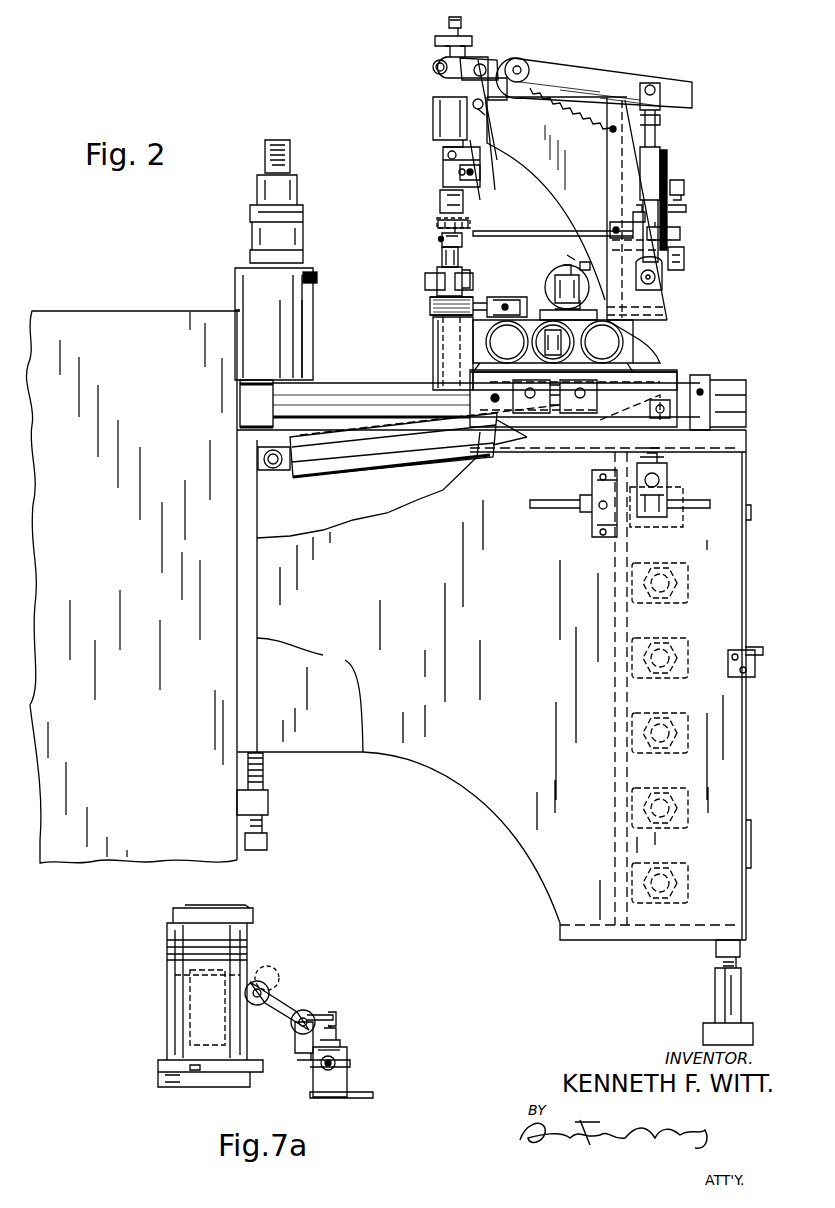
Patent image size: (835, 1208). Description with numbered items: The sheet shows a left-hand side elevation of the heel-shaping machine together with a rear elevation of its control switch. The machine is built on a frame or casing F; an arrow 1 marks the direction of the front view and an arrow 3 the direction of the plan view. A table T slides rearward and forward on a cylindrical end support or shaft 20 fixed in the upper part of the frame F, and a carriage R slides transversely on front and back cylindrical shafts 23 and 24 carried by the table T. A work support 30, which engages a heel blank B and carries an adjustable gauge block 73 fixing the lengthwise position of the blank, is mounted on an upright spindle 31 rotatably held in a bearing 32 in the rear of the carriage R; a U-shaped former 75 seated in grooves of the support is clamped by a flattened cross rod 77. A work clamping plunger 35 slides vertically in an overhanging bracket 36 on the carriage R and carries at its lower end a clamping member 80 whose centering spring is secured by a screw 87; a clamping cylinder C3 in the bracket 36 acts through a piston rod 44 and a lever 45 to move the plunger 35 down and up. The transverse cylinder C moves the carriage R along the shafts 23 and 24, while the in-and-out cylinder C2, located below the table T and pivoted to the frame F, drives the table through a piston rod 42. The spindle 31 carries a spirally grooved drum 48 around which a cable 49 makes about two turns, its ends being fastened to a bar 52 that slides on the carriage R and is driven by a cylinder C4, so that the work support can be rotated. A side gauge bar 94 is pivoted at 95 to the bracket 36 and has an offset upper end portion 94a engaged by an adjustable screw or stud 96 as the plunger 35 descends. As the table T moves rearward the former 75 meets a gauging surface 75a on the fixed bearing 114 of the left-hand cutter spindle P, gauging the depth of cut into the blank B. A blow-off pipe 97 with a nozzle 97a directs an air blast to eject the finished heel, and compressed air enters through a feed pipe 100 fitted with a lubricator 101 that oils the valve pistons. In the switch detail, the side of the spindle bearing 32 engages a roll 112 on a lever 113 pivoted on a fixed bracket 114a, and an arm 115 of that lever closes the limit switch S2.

In FIG. 2, the machine 1 is at (746, 286).
In FIG. 2, the section line 3 is at (379, 90).
In FIG. 2, the cylindrical end support or shaft 20 is at (360, 386).
In FIG. 2, the front cylindrical shaft 23 is at (620, 350).
In FIG. 2, the back cylindrical shaft 24 is at (505, 345).
In FIG. 2, the work support 30 is at (442, 258).
In FIG. 2, the upright spindle 31 is at (448, 325).
In FIG. 2, the bearing 32 is at (455, 340).
In FIG. 7a, the bearing 32 is at (248, 1037).
In FIG. 2, the work clamping plunger 35 is at (440, 80).
In FIG. 2, the overhanging bracket 36 is at (433, 125).
In FIG. 2, the piston rod 42 is at (565, 425).
In FIG. 2, the piston rod 44 is at (660, 135).
In FIG. 2, the lever 45 is at (587, 72).
In FIG. 2, the spirally grooved drum 48 is at (436, 302).
In FIG. 2, the cable 49 is at (440, 310).
In FIG. 2, the bar 52 is at (515, 297).
In FIG. 2, the gauge block 73 is at (440, 240).
In FIG. 2, the U-shaped pattern or former 75 is at (428, 280).
In FIG. 2, the gauging surface 75a is at (315, 283).
In FIG. 2, the flattened cross rod 77 is at (468, 274).
In FIG. 2, the clamping member 80 is at (445, 200).
In FIG. 2, the screw 87 is at (475, 176).
In FIG. 2, the side gauge bar 94 is at (440, 226).
In FIG. 2, the offset upper end portion 94a is at (472, 60).
In FIG. 2, the pivot 95 is at (487, 112).
In FIG. 2, the adjustable screw or stud 96 is at (462, 23).
In FIG. 2, the blow-off pipe 97 is at (680, 232).
In FIG. 2, the nozzle 97a is at (525, 238).
In FIG. 2, the feed pipe 100 is at (556, 515).
In FIG. 2, the lubricator or oil-feed device 101 is at (662, 475).
In FIG. 7a, the roll 112 is at (268, 985).
In FIG. 7a, the lever 113 is at (290, 1005).
In FIG. 2, the fixed bearing 114 is at (300, 350).
In FIG. 7a, the fixed bracket 114a is at (295, 1048).
In FIG. 7a, the arm 115 is at (328, 1014).
In FIG. 2, the heel blank B is at (438, 218).
In FIG. 2, the transverse air cylinder C is at (575, 340).
In FIG. 2, the in-and-out cylinder C2 is at (310, 480).
In FIG. 2, the clamping cylinder C3 is at (676, 200).
In FIG. 2, the cylinder C4 is at (555, 278).
In FIG. 2, the frame or casing F is at (500, 677).
In FIG. 2, the cutter spindle P is at (272, 150).
In FIG. 2, the carriage R is at (565, 368).
In FIG. 7a, the limit switch S2 is at (348, 1057).
In FIG. 2, the table T is at (610, 432).